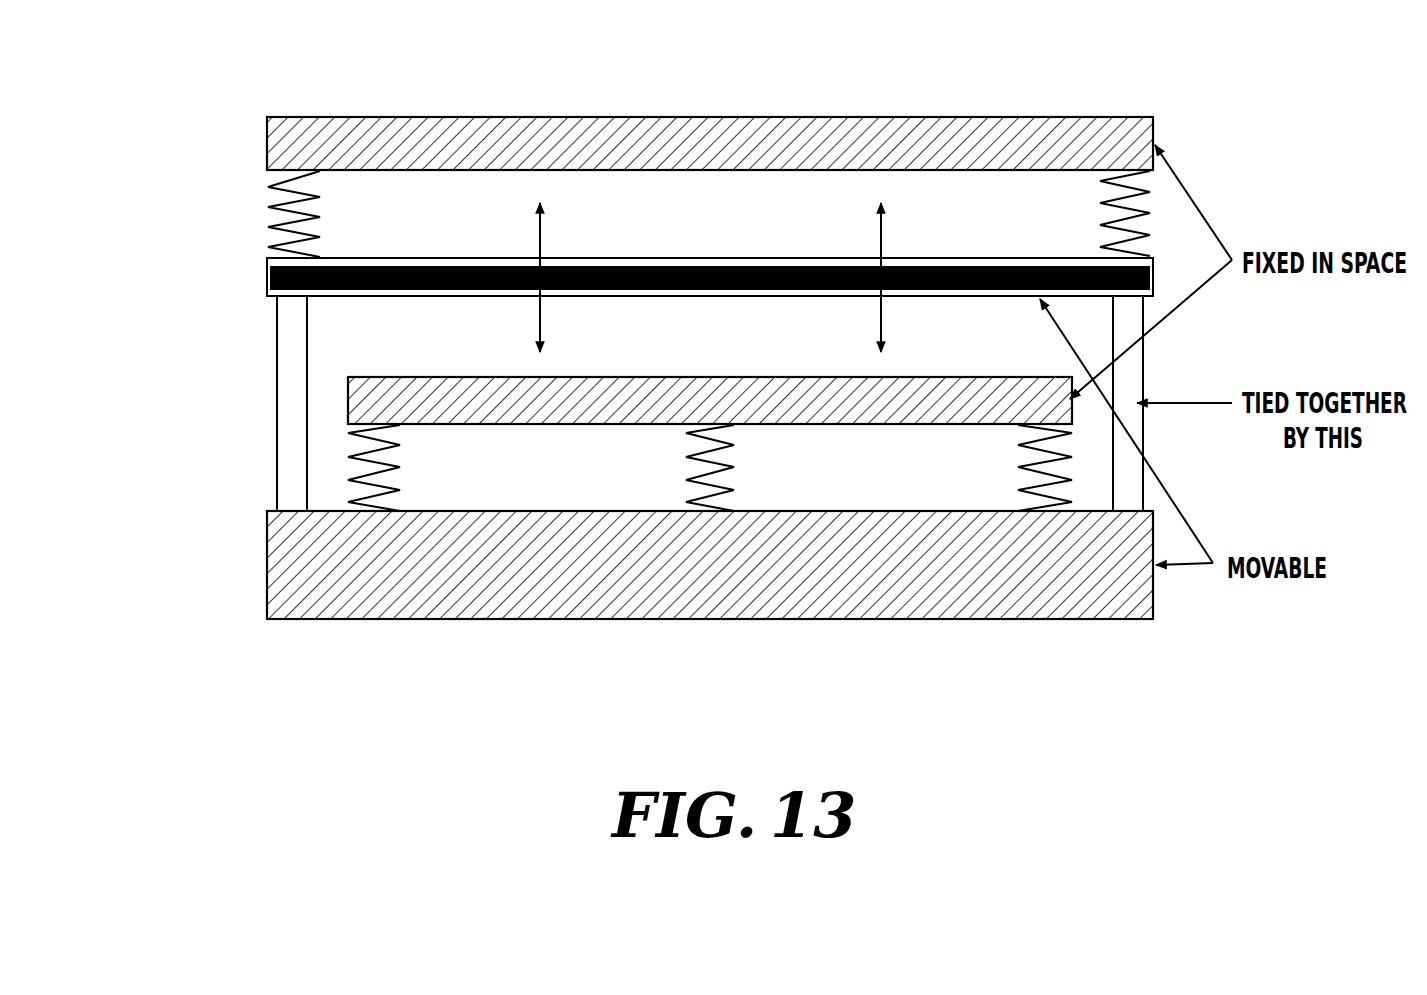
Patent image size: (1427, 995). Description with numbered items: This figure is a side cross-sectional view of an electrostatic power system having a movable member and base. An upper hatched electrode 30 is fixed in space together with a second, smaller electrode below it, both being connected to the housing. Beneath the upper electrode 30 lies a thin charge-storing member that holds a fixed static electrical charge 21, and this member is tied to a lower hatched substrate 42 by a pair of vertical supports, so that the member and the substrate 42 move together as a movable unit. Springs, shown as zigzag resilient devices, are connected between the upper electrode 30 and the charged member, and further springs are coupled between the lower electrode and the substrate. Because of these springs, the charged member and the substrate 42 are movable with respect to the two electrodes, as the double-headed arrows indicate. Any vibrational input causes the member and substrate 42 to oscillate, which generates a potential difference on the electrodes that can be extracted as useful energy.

The electrode 30 is at (951, 132).
The fixed static electrical charge 21 is at (267, 277).
The substrate 42 is at (950, 612).